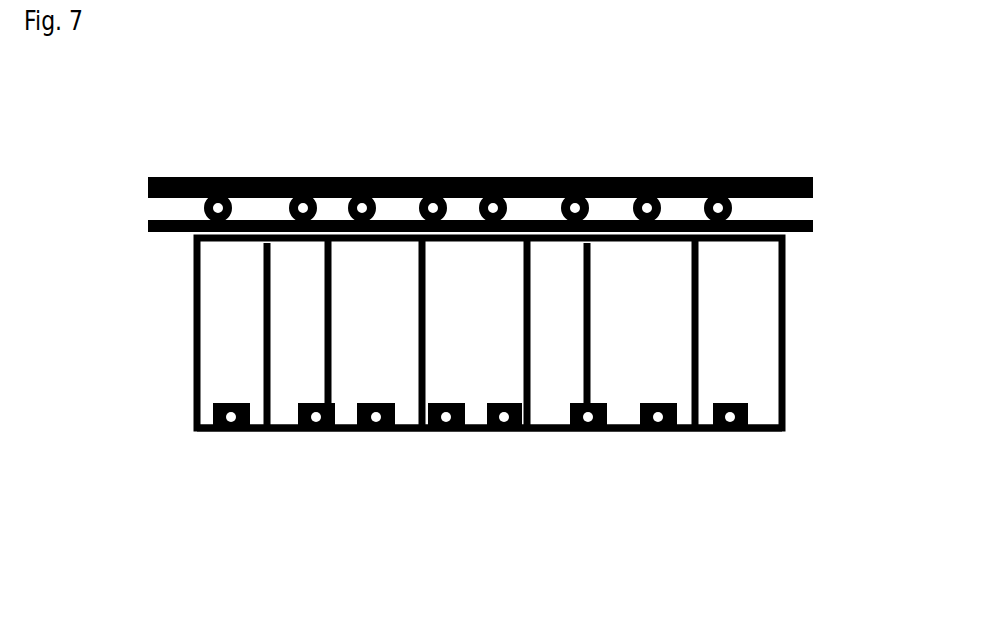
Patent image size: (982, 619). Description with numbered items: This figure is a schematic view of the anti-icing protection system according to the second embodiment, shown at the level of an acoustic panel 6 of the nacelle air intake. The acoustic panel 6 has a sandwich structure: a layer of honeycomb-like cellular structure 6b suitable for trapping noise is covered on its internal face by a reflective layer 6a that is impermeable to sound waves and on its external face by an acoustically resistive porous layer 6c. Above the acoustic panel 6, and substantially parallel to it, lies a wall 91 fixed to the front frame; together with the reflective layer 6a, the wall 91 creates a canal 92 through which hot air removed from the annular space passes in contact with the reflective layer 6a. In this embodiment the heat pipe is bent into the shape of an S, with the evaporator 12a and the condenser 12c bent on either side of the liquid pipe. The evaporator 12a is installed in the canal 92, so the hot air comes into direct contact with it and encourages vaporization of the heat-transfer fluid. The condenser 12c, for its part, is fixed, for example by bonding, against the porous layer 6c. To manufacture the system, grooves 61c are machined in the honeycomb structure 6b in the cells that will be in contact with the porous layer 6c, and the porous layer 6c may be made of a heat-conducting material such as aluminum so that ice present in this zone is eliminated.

The wall 91 is at (648, 177).
The evaporator 12a is at (347, 215).
The canal 92 is at (803, 208).
The reflective layer 6a is at (148, 228).
The acoustic panel 6 is at (762, 367).
The honeycomb-like cellular structure 6b is at (225, 295).
The grooves 61c is at (297, 403).
The acoustically resistive porous layer 6c is at (208, 433).
The condenser 12c is at (430, 433).